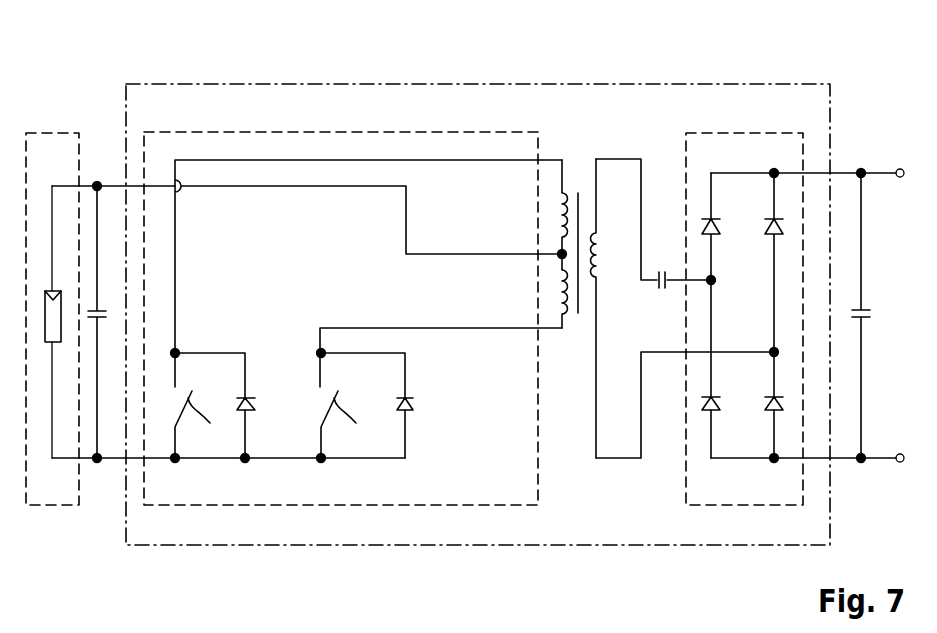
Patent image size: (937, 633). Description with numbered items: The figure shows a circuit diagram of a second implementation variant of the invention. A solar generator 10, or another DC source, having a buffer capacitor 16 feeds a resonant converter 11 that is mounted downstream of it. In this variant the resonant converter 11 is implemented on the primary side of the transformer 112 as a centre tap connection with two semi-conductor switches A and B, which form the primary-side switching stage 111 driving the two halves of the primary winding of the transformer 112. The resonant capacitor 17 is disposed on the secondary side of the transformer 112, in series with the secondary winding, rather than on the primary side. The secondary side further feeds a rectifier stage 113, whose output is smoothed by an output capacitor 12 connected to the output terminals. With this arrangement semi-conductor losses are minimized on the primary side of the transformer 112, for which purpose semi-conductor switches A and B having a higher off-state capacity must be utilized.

The solar generator 10 is at (50, 133).
The buffer capacitor 16 is at (102, 277).
The resonant converter 11 is at (373, 84).
The inverter switching stage 111 is at (238, 132).
The transformer 112 is at (580, 182).
The resonant capacitor 17 is at (666, 272).
The rectifier 113 is at (723, 132).
The output capacitor / load 12 is at (874, 297).